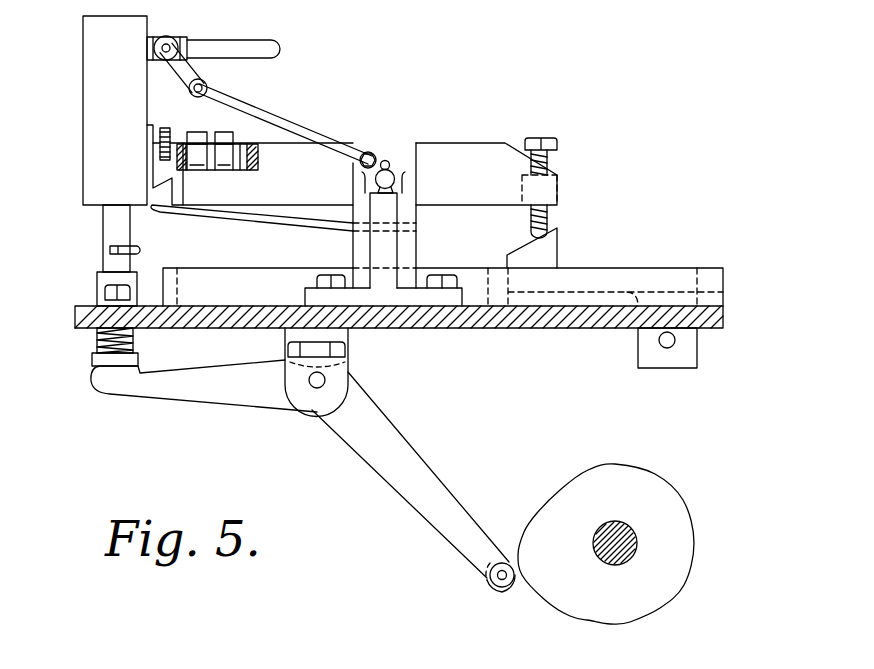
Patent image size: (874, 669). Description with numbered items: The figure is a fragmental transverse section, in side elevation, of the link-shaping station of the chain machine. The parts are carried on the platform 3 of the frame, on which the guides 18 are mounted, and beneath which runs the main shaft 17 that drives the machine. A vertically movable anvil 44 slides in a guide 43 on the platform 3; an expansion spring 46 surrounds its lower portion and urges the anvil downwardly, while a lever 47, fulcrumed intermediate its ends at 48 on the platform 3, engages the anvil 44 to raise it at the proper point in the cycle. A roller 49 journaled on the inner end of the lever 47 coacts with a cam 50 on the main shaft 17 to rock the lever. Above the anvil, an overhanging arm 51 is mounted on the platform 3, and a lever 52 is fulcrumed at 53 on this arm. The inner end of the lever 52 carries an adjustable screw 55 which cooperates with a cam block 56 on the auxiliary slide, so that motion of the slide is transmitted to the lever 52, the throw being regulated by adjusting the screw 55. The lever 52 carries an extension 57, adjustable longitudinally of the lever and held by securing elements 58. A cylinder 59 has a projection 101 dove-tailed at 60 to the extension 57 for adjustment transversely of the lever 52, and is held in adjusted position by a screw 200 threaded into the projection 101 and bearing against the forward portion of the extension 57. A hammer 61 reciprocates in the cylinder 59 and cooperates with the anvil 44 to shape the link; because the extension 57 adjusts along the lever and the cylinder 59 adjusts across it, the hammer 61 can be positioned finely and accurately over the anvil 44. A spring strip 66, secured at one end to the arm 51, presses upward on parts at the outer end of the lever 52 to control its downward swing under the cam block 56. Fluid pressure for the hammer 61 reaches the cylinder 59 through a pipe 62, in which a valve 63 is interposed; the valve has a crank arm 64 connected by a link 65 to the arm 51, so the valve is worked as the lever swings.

The platform 3 is at (725, 318).
The main shaft 17 is at (625, 530).
The guides 18 is at (267, 282).
The guide 43 is at (100, 280).
The anvil 44 is at (103, 262).
The expansion spring 46 is at (97, 346).
The lever 47 is at (225, 392).
The fulcrum 48 is at (317, 382).
The roller 49 is at (502, 588).
The cam 50 is at (680, 560).
The overhanging arm 51 is at (386, 262).
The lever 52 is at (472, 147).
The fulcrum 53 is at (389, 166).
The screw 55 is at (557, 143).
The cam block 56 is at (560, 250).
The extension 57 is at (258, 162).
The securing elements 58 is at (232, 138).
The cylinder 59 is at (83, 140).
The dove-tail 60 is at (153, 168).
The hammer 61 is at (110, 222).
The pipe 62 is at (263, 43).
The valve 63 is at (176, 36).
The crank arm 64 is at (187, 75).
The link 65 is at (303, 133).
The spring strip 66 is at (253, 218).
The projection 101 is at (150, 125).
The screw 200 is at (160, 128).